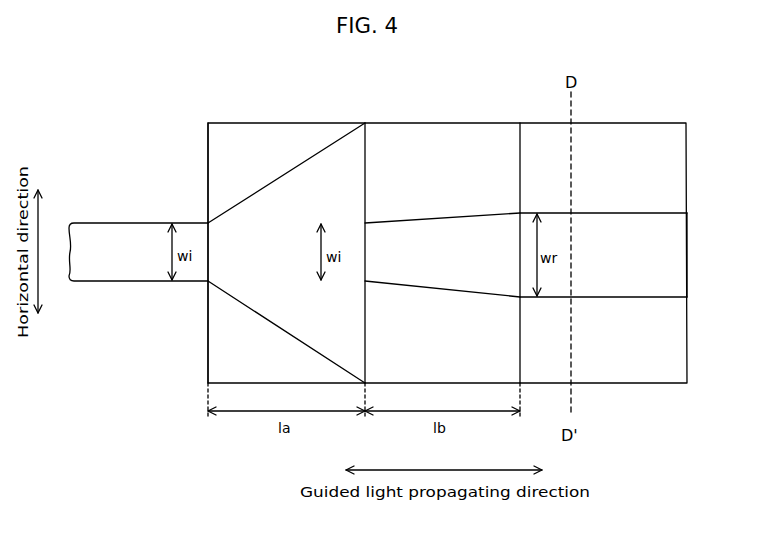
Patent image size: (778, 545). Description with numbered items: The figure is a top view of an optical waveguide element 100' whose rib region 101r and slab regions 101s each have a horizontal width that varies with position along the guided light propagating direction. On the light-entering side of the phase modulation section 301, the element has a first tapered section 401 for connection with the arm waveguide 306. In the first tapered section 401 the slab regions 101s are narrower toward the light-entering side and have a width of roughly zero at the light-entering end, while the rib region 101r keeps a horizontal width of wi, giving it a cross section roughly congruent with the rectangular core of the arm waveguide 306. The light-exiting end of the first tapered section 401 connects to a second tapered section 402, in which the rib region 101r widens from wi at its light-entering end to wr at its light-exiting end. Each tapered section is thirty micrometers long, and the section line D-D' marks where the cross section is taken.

The phase modulation section 301 is at (453, 123).
The first tapered section 401 is at (286, 253).
The second tapered section 402 is at (442, 253).
The arm waveguide 306 is at (138, 252).
The optical waveguide element 100' is at (635, 255).
The slab regions 101s is at (665, 170).
The rib region 101r is at (662, 273).